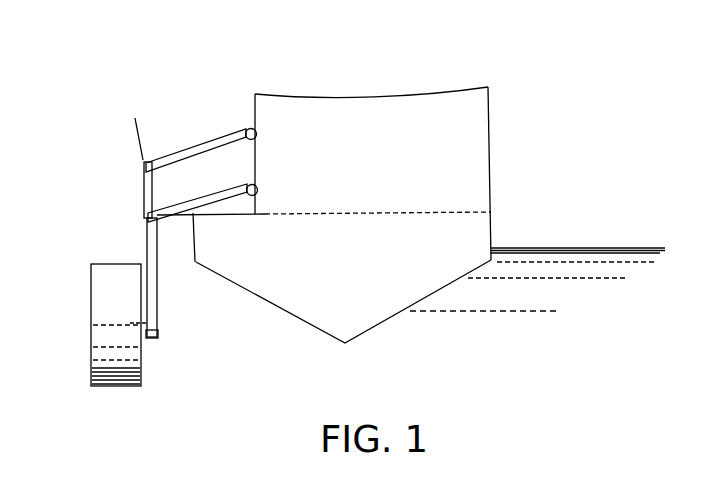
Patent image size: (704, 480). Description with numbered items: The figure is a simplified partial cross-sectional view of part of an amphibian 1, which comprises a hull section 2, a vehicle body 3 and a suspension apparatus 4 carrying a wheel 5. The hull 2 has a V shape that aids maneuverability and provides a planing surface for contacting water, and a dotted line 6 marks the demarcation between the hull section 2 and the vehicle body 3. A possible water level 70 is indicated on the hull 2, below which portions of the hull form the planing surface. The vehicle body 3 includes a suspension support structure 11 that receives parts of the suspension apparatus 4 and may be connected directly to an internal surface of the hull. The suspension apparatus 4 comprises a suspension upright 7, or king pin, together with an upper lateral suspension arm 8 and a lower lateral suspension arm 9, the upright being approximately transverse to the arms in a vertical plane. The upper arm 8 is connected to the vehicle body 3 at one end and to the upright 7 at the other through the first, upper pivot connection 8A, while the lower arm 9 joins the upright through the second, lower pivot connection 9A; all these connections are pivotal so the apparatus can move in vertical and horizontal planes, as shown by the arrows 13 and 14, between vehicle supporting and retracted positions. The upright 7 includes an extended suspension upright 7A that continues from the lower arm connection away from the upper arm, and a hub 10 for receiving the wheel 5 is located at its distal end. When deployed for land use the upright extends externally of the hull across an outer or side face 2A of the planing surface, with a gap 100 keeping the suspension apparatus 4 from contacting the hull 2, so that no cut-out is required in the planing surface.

The amphibian 1 is at (345, 216).
The hull section 2 is at (268, 303).
The outer face or side face of the planing surface 2A is at (190, 272).
The vehicle body 3 is at (389, 160).
The suspension apparatus 4 is at (122, 152).
The wheel 5 is at (93, 386).
The dotted line 6 is at (493, 208).
The suspension upright 7 is at (146, 197).
The extended suspension upright 7A is at (148, 247).
The upper lateral suspension arm 8 is at (198, 148).
The first, upper pivot connection 8A is at (143, 160).
The lower lateral suspension arm 9 is at (197, 200).
The second, lower pivot connection 9A is at (148, 220).
The hub 10 is at (150, 340).
The suspension support structure 11 is at (266, 166).
The arrow indicating vertical plane movement 13 is at (32, 355).
The arrow indicating horizontal plane movement 14 is at (80, 53).
The water level 70 is at (605, 247).
The gap 100 is at (176, 242).